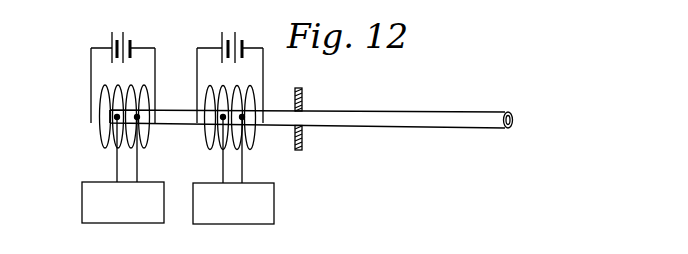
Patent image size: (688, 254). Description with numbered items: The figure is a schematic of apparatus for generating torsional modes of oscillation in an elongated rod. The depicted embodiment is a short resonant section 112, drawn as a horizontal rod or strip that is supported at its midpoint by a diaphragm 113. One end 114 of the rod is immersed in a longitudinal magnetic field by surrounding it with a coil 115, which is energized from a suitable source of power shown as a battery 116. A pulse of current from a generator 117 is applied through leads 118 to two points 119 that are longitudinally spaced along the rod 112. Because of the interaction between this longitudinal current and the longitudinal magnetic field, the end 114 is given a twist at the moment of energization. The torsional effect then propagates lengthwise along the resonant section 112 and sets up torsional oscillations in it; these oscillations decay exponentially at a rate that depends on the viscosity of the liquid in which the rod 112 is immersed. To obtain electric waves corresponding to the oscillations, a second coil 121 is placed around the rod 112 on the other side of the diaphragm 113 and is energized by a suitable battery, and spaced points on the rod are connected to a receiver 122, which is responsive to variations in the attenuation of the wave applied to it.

The resonant section 112 is at (352, 111).
The diaphragm 113 is at (304, 145).
The end 114 is at (108, 117).
The coil 115 is at (102, 98).
The battery 116 is at (119, 42).
The generator 117 is at (82, 197).
The leads 118 is at (133, 168).
The points 119 is at (117, 115).
The second coil 121 is at (248, 92).
The receiver 122 is at (275, 198).